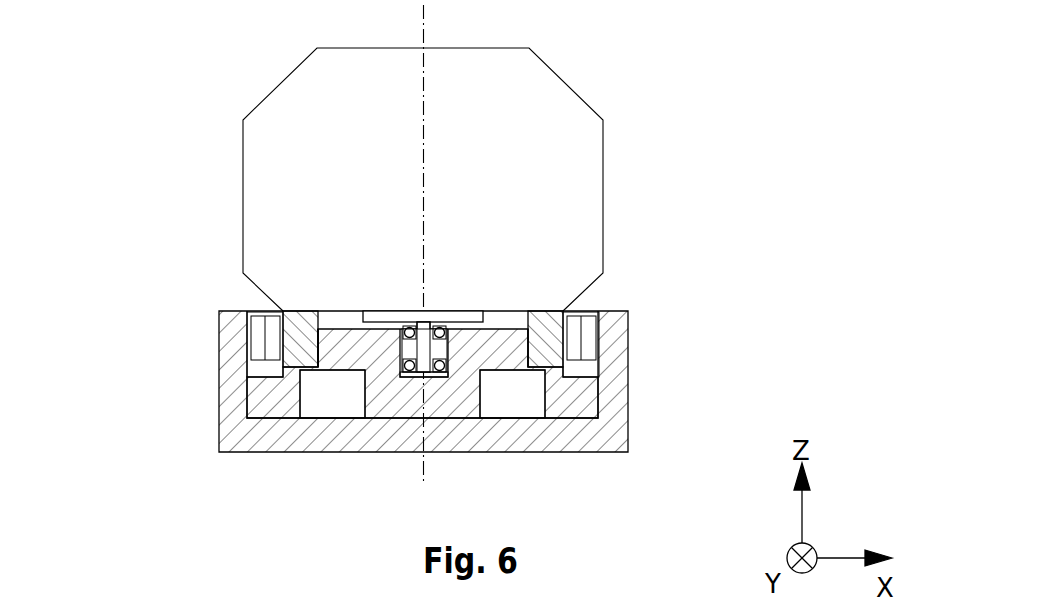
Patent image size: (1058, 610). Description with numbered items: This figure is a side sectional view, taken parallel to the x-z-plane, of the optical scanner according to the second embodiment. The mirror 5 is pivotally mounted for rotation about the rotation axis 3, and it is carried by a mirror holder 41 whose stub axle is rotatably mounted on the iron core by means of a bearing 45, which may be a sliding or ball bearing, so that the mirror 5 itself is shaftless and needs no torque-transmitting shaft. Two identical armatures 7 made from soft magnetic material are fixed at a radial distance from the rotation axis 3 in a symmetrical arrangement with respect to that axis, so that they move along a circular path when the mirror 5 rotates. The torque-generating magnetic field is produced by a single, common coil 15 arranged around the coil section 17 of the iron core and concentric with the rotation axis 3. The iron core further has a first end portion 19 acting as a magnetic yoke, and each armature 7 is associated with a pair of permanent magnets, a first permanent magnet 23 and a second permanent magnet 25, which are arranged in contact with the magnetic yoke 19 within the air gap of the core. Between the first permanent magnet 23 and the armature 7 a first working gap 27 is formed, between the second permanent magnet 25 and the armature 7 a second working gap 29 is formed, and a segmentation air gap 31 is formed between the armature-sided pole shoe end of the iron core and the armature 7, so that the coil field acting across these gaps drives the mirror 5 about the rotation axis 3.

The rotation axis 3 is at (424, 18).
The mirror 5 is at (543, 165).
The armature 7 is at (305, 327).
The coil 15 is at (510, 393).
The coil section 17 is at (400, 410).
The first end portion 19 is at (613, 373).
The first permanent magnet 23 is at (590, 345).
The second permanent magnet 25 is at (258, 342).
The first working gap 27 is at (578, 330).
The second working gap 29 is at (318, 348).
The segmentation air gap 31 is at (318, 350).
The mirror holder 41 is at (455, 309).
The bearing 45 is at (405, 364).